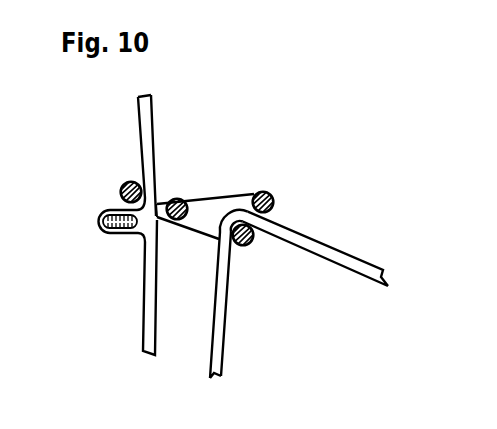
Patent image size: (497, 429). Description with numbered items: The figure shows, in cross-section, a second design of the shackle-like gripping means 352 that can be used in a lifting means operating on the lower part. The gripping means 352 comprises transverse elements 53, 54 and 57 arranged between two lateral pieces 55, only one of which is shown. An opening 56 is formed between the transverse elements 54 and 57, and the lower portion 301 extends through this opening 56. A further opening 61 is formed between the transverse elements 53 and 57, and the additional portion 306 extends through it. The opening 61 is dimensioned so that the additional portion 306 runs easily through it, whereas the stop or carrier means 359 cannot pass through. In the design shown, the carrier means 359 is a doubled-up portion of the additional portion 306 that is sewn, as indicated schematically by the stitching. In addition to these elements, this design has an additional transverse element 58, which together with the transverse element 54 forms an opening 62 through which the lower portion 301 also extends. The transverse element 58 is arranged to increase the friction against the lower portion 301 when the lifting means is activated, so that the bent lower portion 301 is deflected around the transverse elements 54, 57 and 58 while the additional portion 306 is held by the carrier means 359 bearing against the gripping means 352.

The additional portion 306 is at (148, 126).
The carrier means 359 is at (103, 236).
The gripping means 352 is at (189, 246).
The transverse element 53 is at (122, 192).
The transverse element 57 is at (183, 200).
The opening 61 is at (162, 200).
The opening 56 is at (212, 217).
The lateral piece 55 is at (238, 197).
The additional transverse element 58 is at (266, 192).
The transverse element 54 is at (252, 246).
The opening 62 is at (272, 217).
The lower portion 301 is at (308, 245).